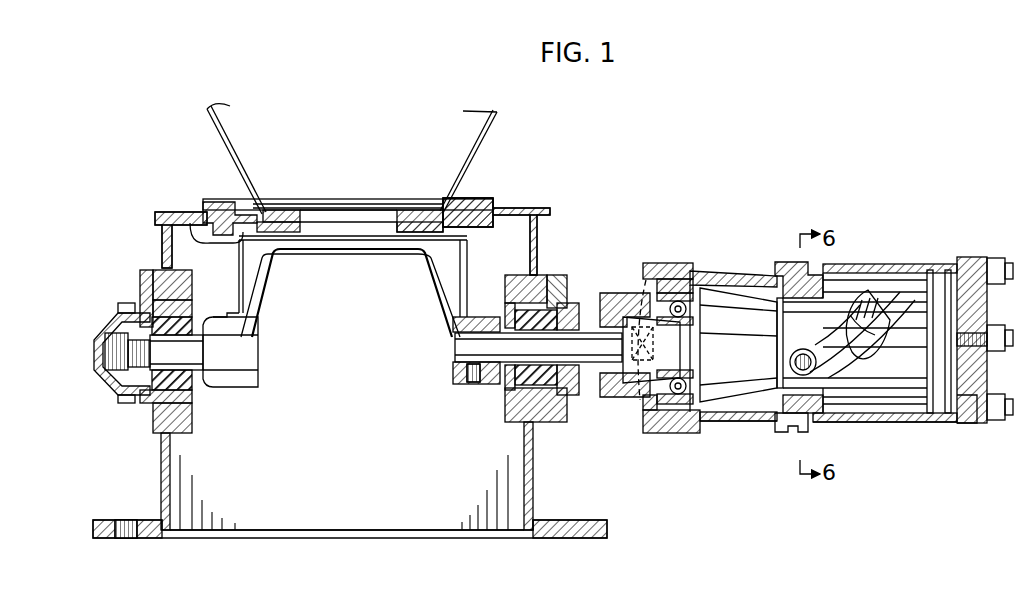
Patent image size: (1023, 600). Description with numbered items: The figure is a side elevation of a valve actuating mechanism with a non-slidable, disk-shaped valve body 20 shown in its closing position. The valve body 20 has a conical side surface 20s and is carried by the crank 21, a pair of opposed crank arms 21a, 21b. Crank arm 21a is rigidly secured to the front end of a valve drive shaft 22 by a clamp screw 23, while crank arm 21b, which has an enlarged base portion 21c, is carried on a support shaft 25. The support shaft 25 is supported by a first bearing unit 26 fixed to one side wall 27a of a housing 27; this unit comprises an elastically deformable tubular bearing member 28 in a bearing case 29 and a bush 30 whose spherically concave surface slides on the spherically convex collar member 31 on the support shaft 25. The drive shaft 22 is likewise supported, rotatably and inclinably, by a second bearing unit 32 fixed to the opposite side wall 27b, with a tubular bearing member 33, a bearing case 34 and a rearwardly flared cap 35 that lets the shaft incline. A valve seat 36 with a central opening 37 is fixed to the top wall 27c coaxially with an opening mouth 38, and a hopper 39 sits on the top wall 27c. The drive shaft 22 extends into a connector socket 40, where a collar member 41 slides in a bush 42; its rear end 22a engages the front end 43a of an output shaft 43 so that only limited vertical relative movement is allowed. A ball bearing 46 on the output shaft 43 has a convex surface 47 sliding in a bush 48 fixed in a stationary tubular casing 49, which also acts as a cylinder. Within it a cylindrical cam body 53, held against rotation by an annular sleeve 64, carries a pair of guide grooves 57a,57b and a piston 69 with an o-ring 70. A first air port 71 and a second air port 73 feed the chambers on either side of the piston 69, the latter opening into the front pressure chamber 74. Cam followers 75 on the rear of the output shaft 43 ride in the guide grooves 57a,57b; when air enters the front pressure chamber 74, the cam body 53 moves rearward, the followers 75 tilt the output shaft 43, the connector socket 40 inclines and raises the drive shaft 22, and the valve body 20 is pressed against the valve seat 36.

The valve body 20 is at (380, 199).
The conical side surface 20s is at (433, 207).
The rotor body 21 is at (351, 328).
The crank arm 21a is at (436, 300).
The crank arm 21b is at (264, 298).
The enlarged base portion 21c is at (235, 386).
The valve drive shaft 22 is at (490, 382).
The rear end of valve drive shaft 22a is at (646, 282).
The clamp screw 23 is at (467, 373).
The support shaft 25 is at (188, 352).
The first bearing unit 26 is at (145, 290).
The housing 27 is at (551, 206).
The side wall 27a is at (160, 480).
The side wall 27b is at (538, 250).
The top wall 27c is at (480, 198).
The tubular bearing member 28 is at (147, 397).
The bearing case 29 is at (155, 412).
The bush 30 is at (110, 380).
The collar member 31 is at (108, 344).
The second bearing unit 32 is at (518, 300).
The tubular bearing member 33 is at (515, 408).
The bearing case 34 is at (531, 425).
The cap 35 is at (572, 302).
The valve seat 36 is at (215, 215).
The central opening 37 is at (425, 212).
The opening mouth 38 is at (265, 211).
The hopper 39 is at (488, 128).
The connector socket 40 is at (630, 396).
The collar member 41 is at (615, 294).
The bush 42 is at (605, 398).
The output shaft 43 is at (748, 340).
The front end of output shaft 43a is at (675, 434).
The ball bearing 46 is at (672, 278).
The spherically convexed external surface 47 is at (755, 272).
The bush 48 is at (708, 422).
The stationary tubular casing 49 is at (900, 264).
The cylindrical body 53 is at (930, 385).
The guide grooves 57a,57b is at (870, 318).
The annular sleeve 64 is at (860, 300).
The piston 69 is at (966, 258).
The o-ring 70 is at (968, 424).
The first air port 71 is at (995, 421).
The second air port 73 is at (792, 432).
The front pressure chamber 74 is at (870, 422).
The cam followers 75 is at (800, 375).